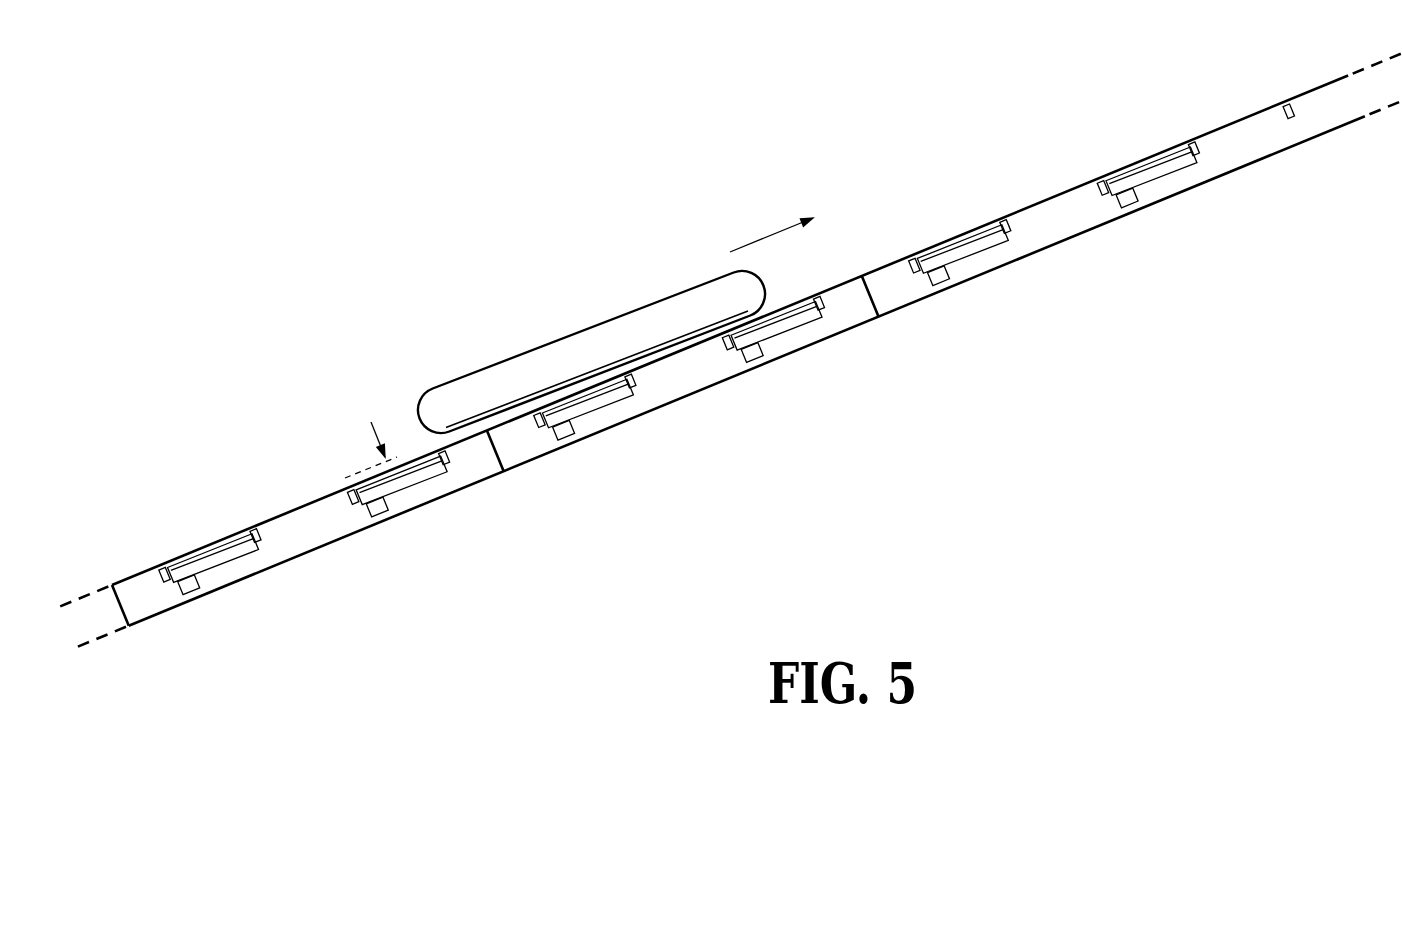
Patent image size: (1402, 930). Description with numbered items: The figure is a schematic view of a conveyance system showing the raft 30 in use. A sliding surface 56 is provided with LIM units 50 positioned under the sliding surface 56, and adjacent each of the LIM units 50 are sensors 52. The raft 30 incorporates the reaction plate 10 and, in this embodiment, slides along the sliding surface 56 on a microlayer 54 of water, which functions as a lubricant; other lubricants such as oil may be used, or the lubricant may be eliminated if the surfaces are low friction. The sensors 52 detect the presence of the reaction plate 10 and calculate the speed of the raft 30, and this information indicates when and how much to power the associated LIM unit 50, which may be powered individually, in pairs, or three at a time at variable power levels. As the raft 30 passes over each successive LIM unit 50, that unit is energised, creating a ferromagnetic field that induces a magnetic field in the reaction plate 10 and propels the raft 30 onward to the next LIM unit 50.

The reaction plate 10 is at (588, 306).
The raft 30 is at (638, 305).
The LIM unit 50 is at (957, 263).
The sensor 52 is at (1006, 238).
The microlayer of water 54 is at (396, 480).
The sliding surface 56 is at (1073, 190).